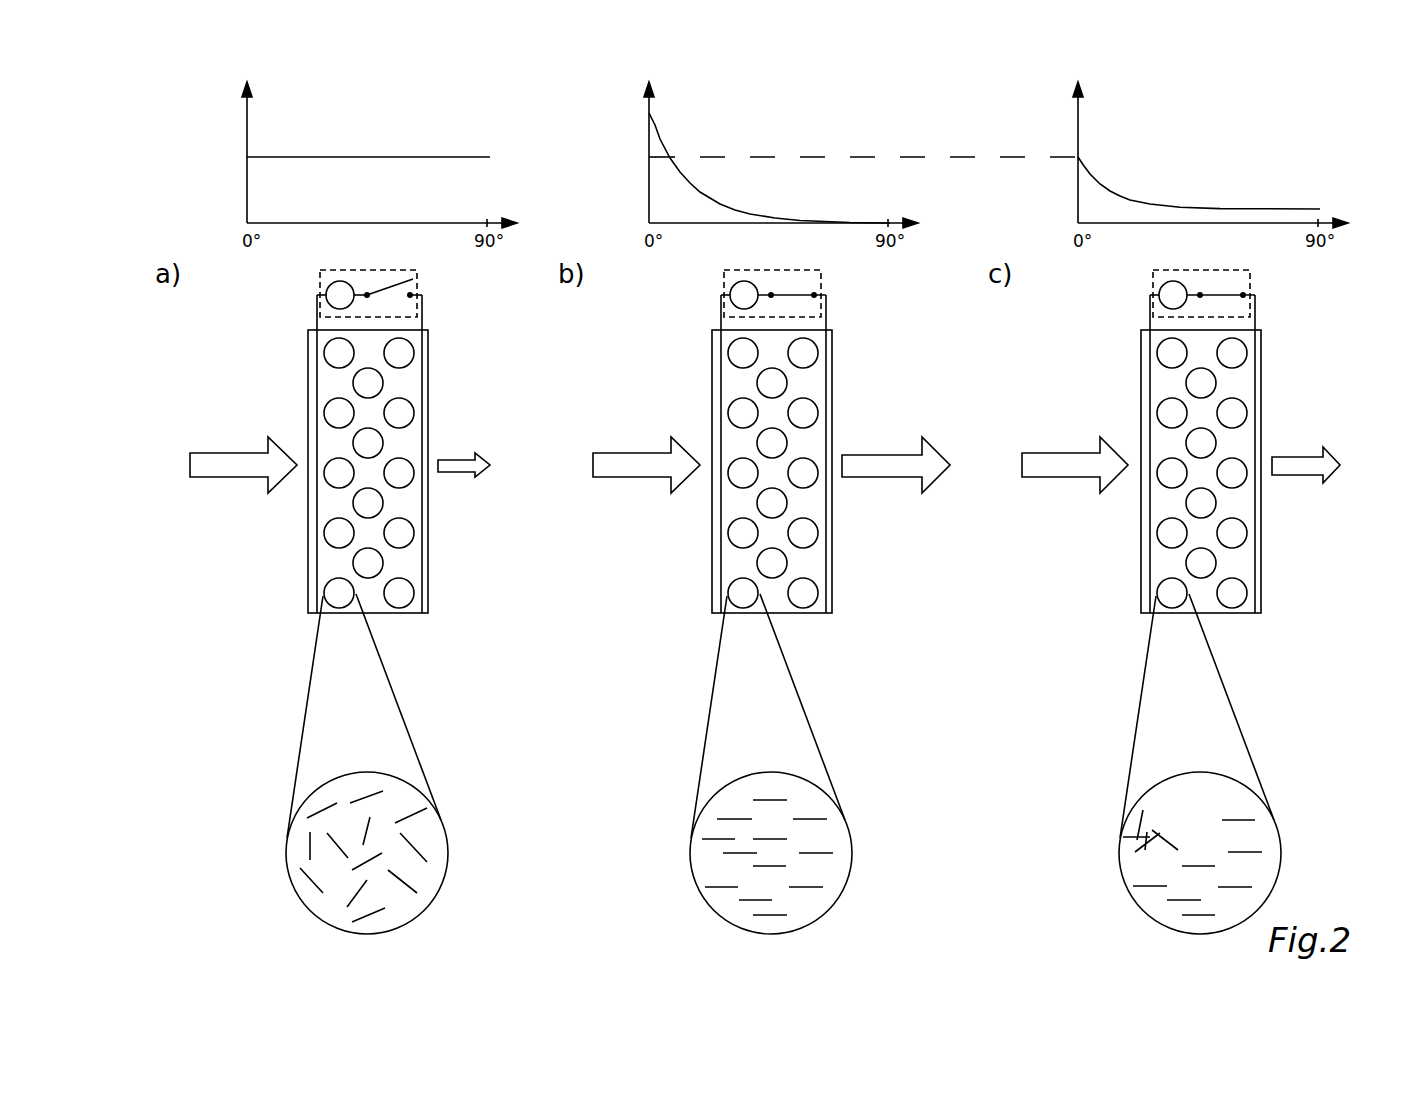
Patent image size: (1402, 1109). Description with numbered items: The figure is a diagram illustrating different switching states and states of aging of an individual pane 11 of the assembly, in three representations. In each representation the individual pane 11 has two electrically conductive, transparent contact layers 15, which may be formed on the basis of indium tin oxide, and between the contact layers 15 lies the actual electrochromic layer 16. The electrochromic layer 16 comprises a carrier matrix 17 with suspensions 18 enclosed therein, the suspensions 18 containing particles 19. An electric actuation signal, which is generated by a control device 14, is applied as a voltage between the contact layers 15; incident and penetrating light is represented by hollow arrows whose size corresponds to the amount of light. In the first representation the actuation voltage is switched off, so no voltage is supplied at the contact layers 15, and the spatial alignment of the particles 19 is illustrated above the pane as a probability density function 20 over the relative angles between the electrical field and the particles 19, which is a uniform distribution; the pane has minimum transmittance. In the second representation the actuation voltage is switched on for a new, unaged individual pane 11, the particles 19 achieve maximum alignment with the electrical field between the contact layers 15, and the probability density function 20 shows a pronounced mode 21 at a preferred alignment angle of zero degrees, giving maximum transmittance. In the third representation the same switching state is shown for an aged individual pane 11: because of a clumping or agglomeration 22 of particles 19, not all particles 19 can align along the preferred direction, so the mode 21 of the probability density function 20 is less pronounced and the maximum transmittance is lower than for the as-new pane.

The individual pane 11 is at (288, 335).
The control device 14 is at (320, 283).
The contact layers 15 is at (308, 362).
The electrochromic layer 16 is at (374, 340).
The carrier matrix 17 is at (330, 510).
The suspensions 18 is at (318, 790).
The particles 19 is at (308, 855).
The probability density function 20 is at (388, 113).
The mode 21 is at (651, 114).
The agglomeration 22 is at (1157, 810).